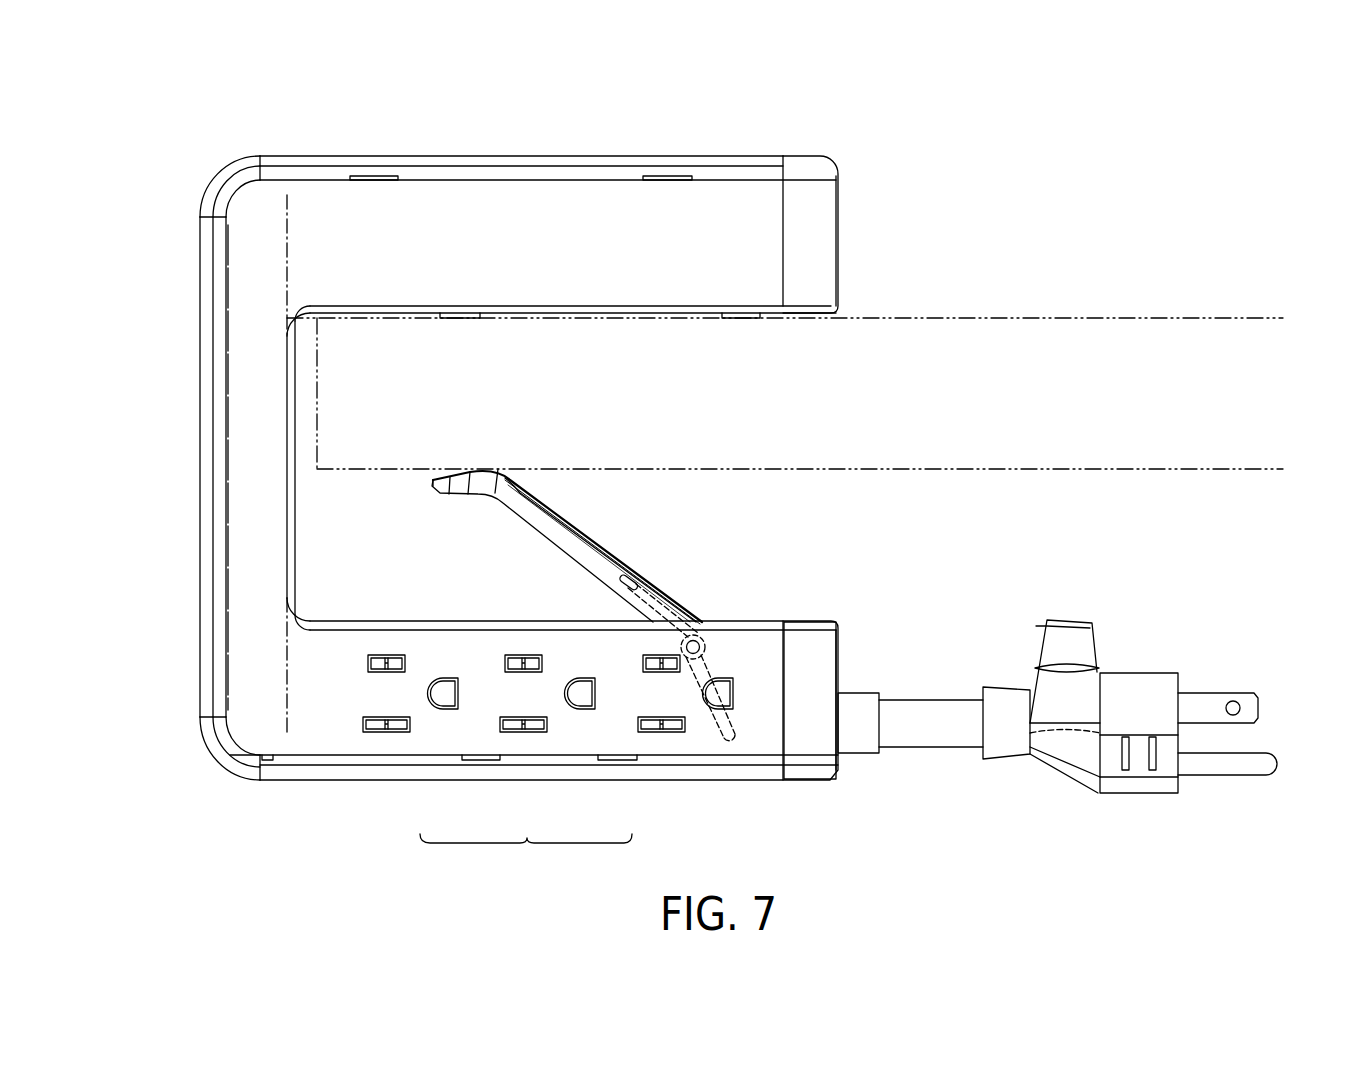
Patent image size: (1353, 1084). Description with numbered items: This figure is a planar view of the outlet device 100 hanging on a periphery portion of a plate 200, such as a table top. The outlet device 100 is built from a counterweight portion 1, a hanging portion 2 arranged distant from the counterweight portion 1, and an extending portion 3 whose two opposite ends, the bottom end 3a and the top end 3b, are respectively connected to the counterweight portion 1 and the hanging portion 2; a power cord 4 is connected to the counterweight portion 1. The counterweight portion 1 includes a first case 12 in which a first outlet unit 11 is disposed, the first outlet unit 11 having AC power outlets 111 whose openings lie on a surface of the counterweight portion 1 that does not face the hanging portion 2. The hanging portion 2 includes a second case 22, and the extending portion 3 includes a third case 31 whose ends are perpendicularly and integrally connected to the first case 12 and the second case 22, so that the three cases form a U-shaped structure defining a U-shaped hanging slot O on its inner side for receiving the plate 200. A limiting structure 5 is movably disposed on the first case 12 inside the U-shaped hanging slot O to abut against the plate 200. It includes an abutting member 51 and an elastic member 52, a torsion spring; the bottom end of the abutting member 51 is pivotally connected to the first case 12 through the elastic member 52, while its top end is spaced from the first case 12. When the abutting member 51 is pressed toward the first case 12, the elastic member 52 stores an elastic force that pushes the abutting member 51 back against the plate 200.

The outlet device 100 is at (839, 150).
The plate 200 is at (1109, 305).
The counterweight portion 1 is at (456, 612).
The first outlet unit 11 is at (526, 855).
The AC power outlet 111 is at (395, 725).
The first case 12 is at (756, 735).
The hanging portion 2 is at (461, 148).
The second case 22 is at (601, 210).
The extending portion 3 is at (194, 516).
The third case 31 is at (250, 430).
The bottom end of extending portion 3a is at (287, 724).
The top end of extending portion 3b is at (287, 207).
The power cord 4 is at (1137, 663).
The limiting structure 5 is at (627, 552).
The abutting member 51 is at (559, 522).
The elastic member 52 is at (706, 640).
The U-shaped hanging slot O is at (783, 540).